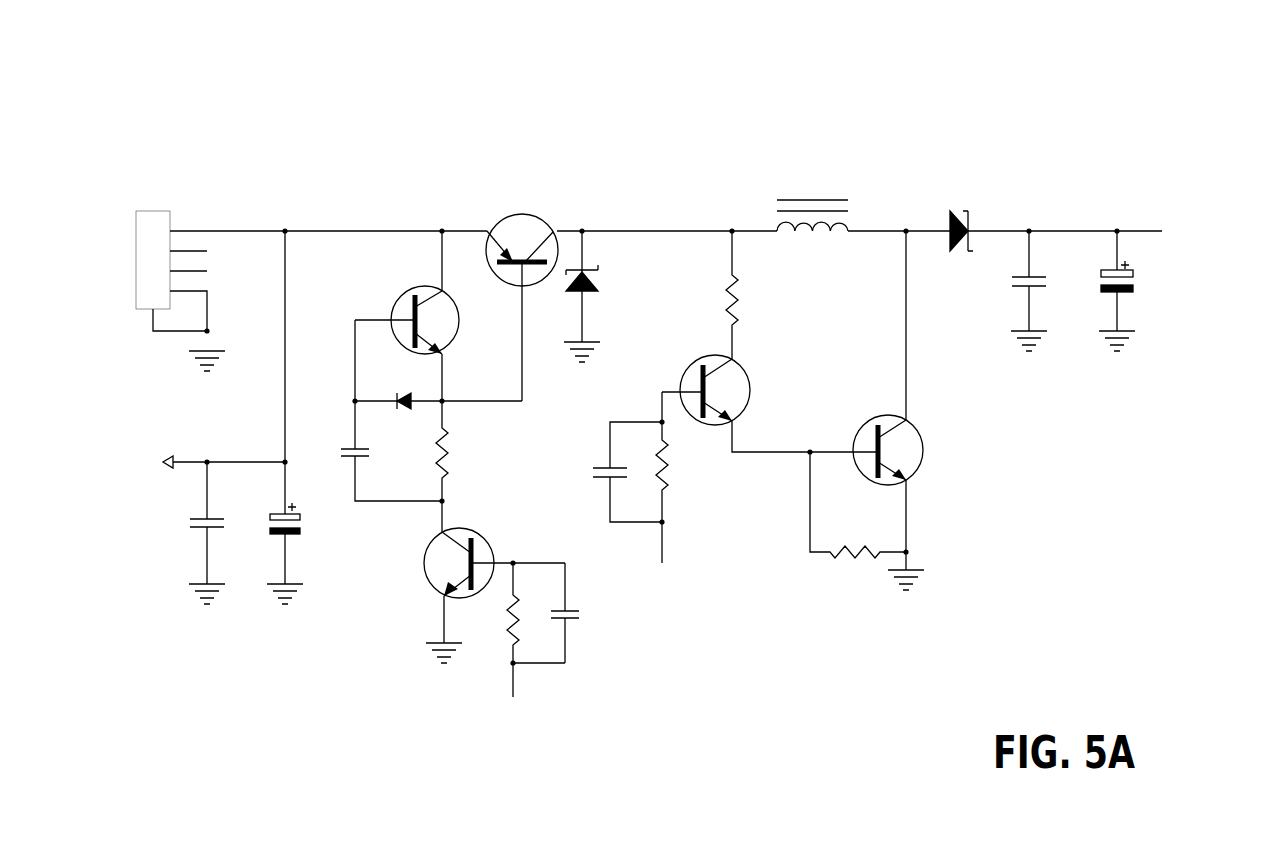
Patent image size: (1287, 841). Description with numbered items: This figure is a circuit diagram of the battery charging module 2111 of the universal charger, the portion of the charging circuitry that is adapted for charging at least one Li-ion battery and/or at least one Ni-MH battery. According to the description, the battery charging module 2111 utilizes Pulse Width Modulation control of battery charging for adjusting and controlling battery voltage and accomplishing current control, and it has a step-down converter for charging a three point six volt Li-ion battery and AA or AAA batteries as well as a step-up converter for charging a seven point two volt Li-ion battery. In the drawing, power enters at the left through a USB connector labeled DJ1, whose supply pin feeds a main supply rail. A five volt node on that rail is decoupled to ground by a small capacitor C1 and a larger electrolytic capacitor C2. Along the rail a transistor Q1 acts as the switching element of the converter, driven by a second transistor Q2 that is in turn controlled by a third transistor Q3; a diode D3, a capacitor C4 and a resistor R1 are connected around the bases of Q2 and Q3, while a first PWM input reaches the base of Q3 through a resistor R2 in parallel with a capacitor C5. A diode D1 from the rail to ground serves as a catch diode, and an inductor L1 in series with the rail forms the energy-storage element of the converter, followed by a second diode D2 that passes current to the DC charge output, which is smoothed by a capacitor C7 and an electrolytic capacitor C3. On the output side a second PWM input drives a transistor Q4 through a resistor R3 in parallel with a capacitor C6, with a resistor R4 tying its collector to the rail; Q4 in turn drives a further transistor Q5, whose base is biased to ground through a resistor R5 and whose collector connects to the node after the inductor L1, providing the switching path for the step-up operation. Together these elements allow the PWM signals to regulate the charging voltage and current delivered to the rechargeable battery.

The battery charging module 2111 is at (957, 117).
The USB connector DJ1 is at (170, 280).
The capacitor 0.1uF C1 is at (223, 533).
The electrolytic capacitor 220uF C2 is at (306, 553).
The electrolytic capacitor 100uF C3 is at (1138, 291).
The capacitor 103 C4 is at (393, 412).
The capacitor 102 C5 is at (583, 613).
The capacitor 102 C6 is at (627, 472).
The capacitor 0.1uF C7 is at (1043, 291).
The PNP transistor Q1 is at (522, 296).
The NPN transistor Q2 is at (420, 327).
The NPN transistor Q3 is at (484, 595).
The NPN transistor Q4 is at (770, 405).
The NPN transistor Q5 is at (904, 410).
The resistor R1 is at (454, 477).
The resistor R2 is at (536, 630).
The resistor R3 is at (673, 477).
The resistor R4 is at (743, 295).
The resistor R5 is at (858, 505).
The Schottky diode SS14 D1 is at (598, 296).
The Schottky diode SS14 D2 is at (952, 231).
The diode D3 is at (437, 387).
The inductor L1 is at (812, 229).